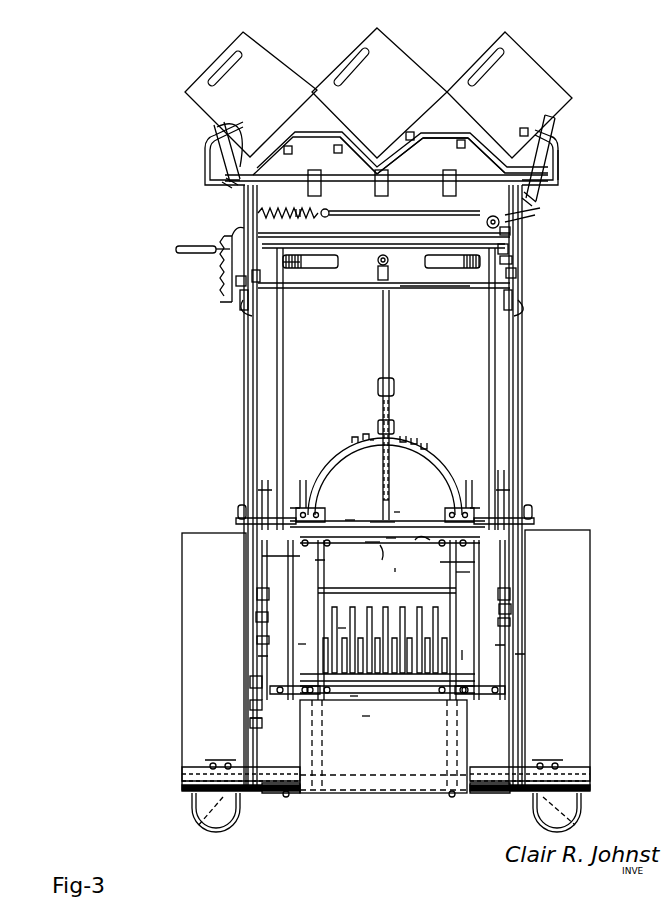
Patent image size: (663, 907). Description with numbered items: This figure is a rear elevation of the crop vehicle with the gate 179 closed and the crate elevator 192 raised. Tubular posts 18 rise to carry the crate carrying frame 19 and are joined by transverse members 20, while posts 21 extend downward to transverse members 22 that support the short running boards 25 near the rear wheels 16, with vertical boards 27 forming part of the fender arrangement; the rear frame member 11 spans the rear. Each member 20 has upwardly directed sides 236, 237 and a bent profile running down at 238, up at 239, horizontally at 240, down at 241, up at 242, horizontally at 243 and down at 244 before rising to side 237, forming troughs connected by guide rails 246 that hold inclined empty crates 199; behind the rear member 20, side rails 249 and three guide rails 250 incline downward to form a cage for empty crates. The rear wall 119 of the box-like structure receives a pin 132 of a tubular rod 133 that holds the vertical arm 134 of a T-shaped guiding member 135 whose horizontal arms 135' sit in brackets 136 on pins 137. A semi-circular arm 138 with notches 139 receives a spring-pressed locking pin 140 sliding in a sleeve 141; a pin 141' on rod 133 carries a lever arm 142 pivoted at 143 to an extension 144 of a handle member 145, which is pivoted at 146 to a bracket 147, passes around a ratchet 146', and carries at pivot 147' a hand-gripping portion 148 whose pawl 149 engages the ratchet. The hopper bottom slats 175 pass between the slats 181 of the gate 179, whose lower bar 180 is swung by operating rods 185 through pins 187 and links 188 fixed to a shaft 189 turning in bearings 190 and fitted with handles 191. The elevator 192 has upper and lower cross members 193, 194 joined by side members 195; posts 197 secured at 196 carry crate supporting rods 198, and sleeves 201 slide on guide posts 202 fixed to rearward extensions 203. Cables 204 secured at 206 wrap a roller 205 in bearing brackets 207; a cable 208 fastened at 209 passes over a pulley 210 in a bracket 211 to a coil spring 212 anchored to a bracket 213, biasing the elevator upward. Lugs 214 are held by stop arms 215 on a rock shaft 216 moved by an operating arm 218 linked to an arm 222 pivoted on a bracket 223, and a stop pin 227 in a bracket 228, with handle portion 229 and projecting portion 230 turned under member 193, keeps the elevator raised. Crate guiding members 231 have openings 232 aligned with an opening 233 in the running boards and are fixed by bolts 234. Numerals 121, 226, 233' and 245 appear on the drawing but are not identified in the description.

The rear frame member 11 is at (427, 536).
The rear wheels 16 is at (195, 812).
The posts 18 is at (244, 410).
The crate carrying frame 19 is at (565, 172).
The transverse members 20 is at (413, 178).
The posts 21 is at (320, 563).
The transverse members 22 is at (258, 792).
The short running boards 25 is at (581, 765).
The vertical boards 27 is at (183, 690).
The rear wall 119 is at (333, 510).
The support post 121 is at (294, 507).
The pin or shaft 132 is at (398, 512).
The tubular rod 133 is at (389, 500).
The vertical arm 134 is at (393, 380).
The T-shaped guiding member 135 is at (384, 308).
The horizontal arms 135' is at (435, 296).
The brackets 136 is at (252, 312).
The pins 137 is at (262, 305).
The semi-circular arm 138 is at (433, 452).
The notches 139 is at (389, 443).
The locking pin 140 is at (369, 446).
The sleeve 141 is at (368, 426).
The pin 141' is at (414, 438).
The lever arm 142 is at (378, 372).
The pivot 143 is at (389, 258).
The extension 144 is at (372, 259).
The handle member 145 is at (343, 250).
The pivot 146 is at (475, 238).
The ratchet member 146' is at (216, 286).
The bracket 147 is at (532, 224).
The pivot 147' is at (196, 262).
The hand-gripping portion 148 is at (216, 244).
The pawl or dog 149 is at (222, 236).
The inclined bottom slats 175 is at (395, 665).
The movable gate 179 is at (300, 648).
The lower transverse bar 180 is at (258, 722).
The slats 181 is at (366, 720).
The operating rods 185 is at (520, 658).
The pin 187 is at (262, 495).
The short link 188 is at (263, 485).
The transverse shaft 189 is at (350, 523).
The bearings 190 is at (239, 518).
The handles 191 is at (238, 512).
The crate elevator 192 is at (462, 656).
The upper cross frame member 193 is at (391, 540).
The lower cross frame member 194 is at (354, 700).
The vertical side members 195 is at (470, 590).
The securement 196 is at (462, 575).
The posts 197 is at (470, 565).
The crate supporting rods 198 is at (286, 794).
The crates 199 is at (205, 88).
The annular sleeves 201 is at (260, 550).
The guide posts 202 is at (321, 575).
The rearward extensions 203 is at (303, 508).
The cables 204 is at (277, 378).
The roller 205 is at (300, 276).
The cable securement 206 is at (291, 262).
The bearing brackets 207 is at (240, 282).
The cable 208 is at (488, 217).
The cable securement 209 is at (518, 262).
The pulley 210 is at (535, 215).
The bracket 211 is at (540, 208).
The coil spring 212 is at (301, 216).
The bracket 213 is at (262, 210).
The lug 214 is at (262, 640).
The stop arms 215 is at (258, 618).
The rock shaft 216 is at (350, 592).
The operating arm 218 is at (262, 595).
The arm 222 is at (250, 705).
The bracket 223 is at (250, 724).
The stop 226 is at (251, 683).
The stop pin 227 is at (368, 545).
The bracket 228 is at (404, 576).
The handle portion 229 is at (378, 516).
The projecting portion 230 is at (374, 557).
The crate guiding and holding members 231 is at (273, 793).
The openings 232 is at (204, 820).
The opening 233 is at (560, 784).
The base edge 233' is at (214, 794).
The bolts 234 is at (218, 765).
The side 236 is at (205, 160).
The side 237 is at (558, 150).
The downwardly inclined portion 238 is at (215, 127).
The upwardly inclined portion 239 is at (256, 150).
The horizontal portion 240 is at (310, 137).
The downwardly inclined portion 241 is at (356, 156).
The upwardly inclined portion 242 is at (414, 153).
The horizontal portion 243 is at (445, 136).
The downwardly inclined portion 244 is at (486, 156).
The strut 245 is at (541, 122).
The guide rails 246 is at (412, 134).
The side rails 249 is at (218, 160).
The guide rails 250 is at (320, 185).